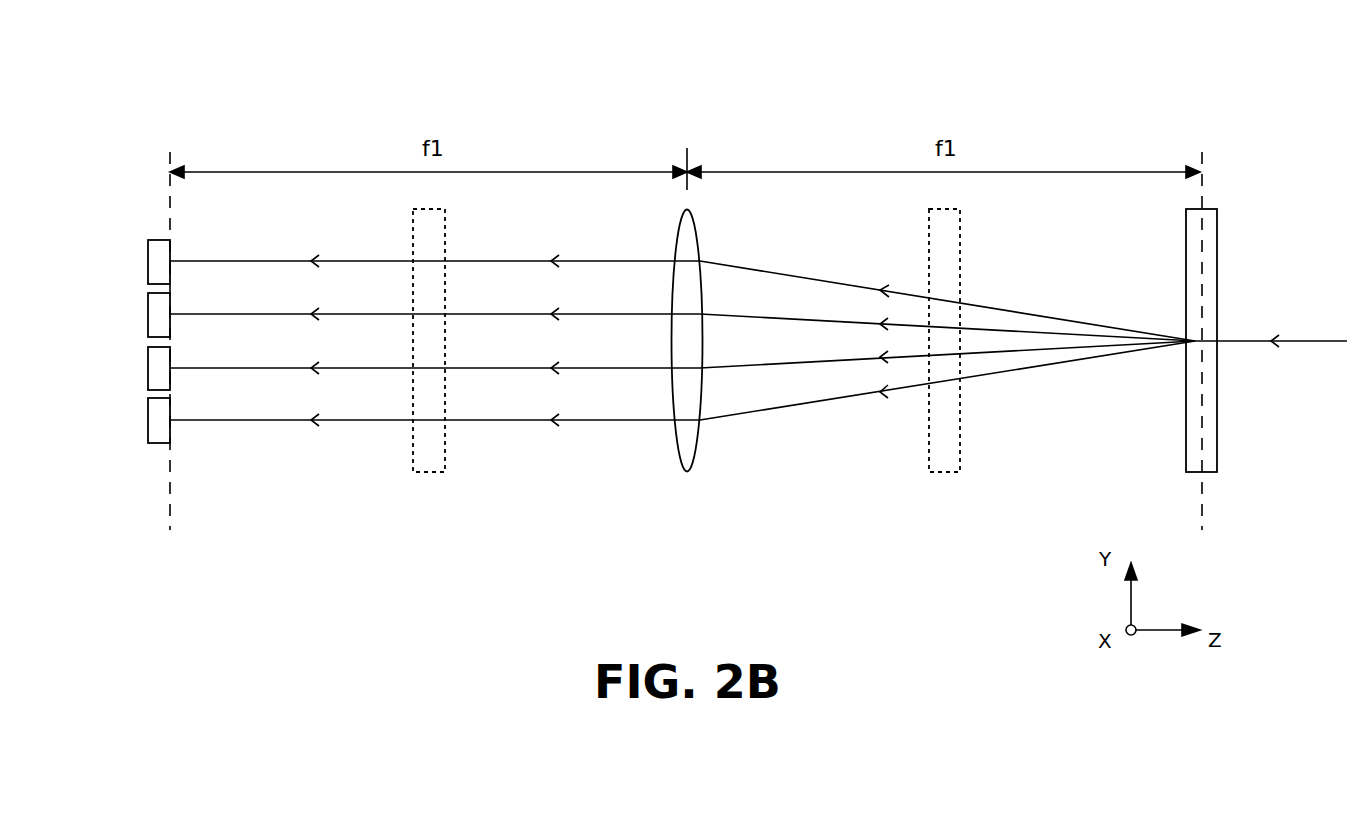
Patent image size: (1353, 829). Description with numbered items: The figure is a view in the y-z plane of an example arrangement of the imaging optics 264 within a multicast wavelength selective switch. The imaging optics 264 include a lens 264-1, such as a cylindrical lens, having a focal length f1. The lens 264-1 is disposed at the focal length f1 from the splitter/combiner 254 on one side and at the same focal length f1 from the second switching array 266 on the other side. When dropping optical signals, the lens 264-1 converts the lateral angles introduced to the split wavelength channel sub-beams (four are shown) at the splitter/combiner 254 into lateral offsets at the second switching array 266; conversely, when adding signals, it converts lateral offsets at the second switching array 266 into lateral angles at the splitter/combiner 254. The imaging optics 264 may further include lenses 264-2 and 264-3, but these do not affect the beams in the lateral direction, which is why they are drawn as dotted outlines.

The imaging optics 264 is at (360, 95).
The lens 264-1 is at (688, 364).
The lens 264-2 is at (434, 363).
The lens 264-3 is at (938, 363).
The splitter/combiner 254 is at (1230, 331).
The second switching array 266 is at (125, 238).